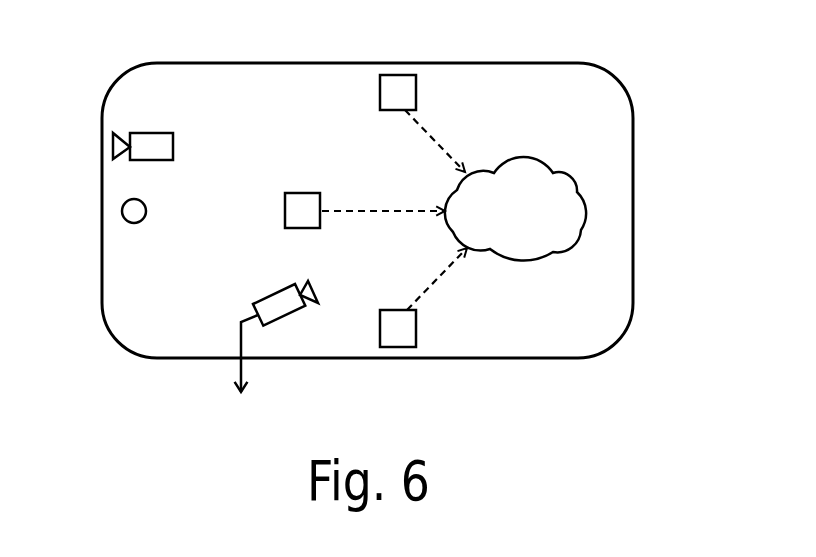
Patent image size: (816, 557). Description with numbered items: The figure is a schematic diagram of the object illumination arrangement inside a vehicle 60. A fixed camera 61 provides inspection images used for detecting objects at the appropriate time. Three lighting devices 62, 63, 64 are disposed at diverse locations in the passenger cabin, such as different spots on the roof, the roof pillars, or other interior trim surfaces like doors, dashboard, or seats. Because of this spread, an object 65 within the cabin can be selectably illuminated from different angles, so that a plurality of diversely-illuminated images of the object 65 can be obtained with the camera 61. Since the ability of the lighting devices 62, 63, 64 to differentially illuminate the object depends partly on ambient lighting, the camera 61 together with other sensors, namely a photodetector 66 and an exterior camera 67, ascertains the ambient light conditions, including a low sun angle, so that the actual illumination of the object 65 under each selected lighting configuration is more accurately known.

The vehicle 60 is at (562, 60).
The fixed camera 61 is at (263, 298).
The lighting device 62 is at (388, 74).
The lighting device 63 is at (292, 192).
The lighting device 64 is at (417, 338).
The object 65 is at (582, 233).
The photodetector 66 is at (128, 222).
The exterior camera 67 is at (166, 133).